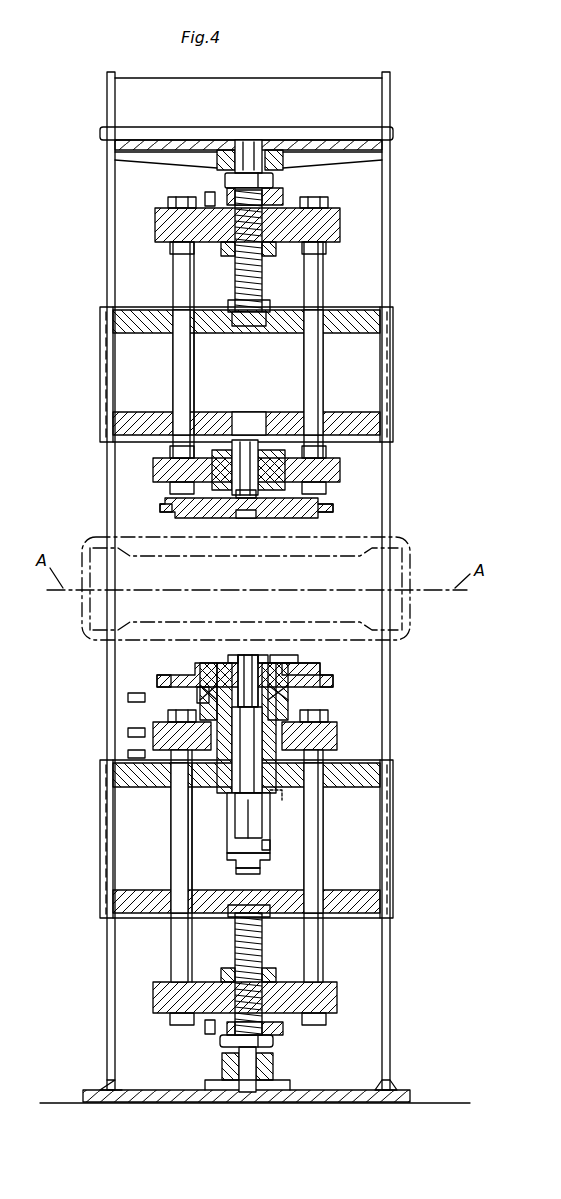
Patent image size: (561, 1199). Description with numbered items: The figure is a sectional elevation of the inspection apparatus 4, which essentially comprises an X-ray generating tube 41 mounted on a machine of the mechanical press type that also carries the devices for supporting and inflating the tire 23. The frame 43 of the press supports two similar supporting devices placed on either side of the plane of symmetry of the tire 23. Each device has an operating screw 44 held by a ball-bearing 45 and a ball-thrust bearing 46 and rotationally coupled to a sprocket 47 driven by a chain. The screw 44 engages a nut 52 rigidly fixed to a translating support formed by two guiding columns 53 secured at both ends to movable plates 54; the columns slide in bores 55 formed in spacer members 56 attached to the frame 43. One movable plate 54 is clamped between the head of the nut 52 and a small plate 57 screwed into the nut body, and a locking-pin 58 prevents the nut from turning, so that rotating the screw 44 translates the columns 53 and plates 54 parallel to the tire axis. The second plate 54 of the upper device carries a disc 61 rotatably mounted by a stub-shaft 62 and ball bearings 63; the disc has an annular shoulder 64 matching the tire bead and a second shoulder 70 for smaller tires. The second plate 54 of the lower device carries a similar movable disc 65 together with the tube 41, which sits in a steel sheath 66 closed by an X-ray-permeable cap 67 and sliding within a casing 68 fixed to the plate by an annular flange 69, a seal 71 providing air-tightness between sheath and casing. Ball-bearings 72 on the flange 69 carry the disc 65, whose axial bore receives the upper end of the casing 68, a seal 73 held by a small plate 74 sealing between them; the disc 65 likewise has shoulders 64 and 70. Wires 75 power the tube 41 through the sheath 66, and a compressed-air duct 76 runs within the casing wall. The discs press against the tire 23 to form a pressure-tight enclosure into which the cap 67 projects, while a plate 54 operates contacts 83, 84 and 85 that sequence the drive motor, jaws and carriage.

The inspection apparatus 4 is at (419, 239).
The tire 23 is at (400, 545).
The X-ray generating tube 41 is at (244, 805).
The frame 43 is at (386, 489).
The operating screw 44 is at (262, 283).
The ball-bearing 45 is at (282, 172).
The ball-thrust bearing 46 is at (233, 310).
The sprocket 47 is at (225, 181).
The nut 52 is at (280, 200).
The guiding columns 53 is at (172, 372).
The movable plates 54 is at (340, 226).
The bores 55 is at (194, 318).
The spacer members 56 is at (382, 321).
The small plate 57 is at (274, 250).
The locking-pin 58 is at (212, 205).
The disc 61 is at (334, 508).
The stub-shaft 62 is at (240, 450).
The ball bearings 63 is at (262, 487).
The annular shoulder 64 is at (162, 508).
The movable disc 65 is at (334, 683).
The steel sheath 66 is at (228, 848).
The cap 67 is at (250, 660).
The casing 68 is at (234, 775).
The annular flange 69 is at (200, 708).
The second shoulder 70 is at (170, 514).
The seal 71 is at (222, 795).
The ball-bearings 72 is at (292, 690).
The seal 73 is at (318, 672).
The small plate 74 is at (278, 660).
The wires 75 is at (270, 845).
The compressed-air duct 76 is at (280, 803).
The contact 83 is at (128, 697).
The contact 84 is at (128, 732).
The contact 85 is at (128, 755).